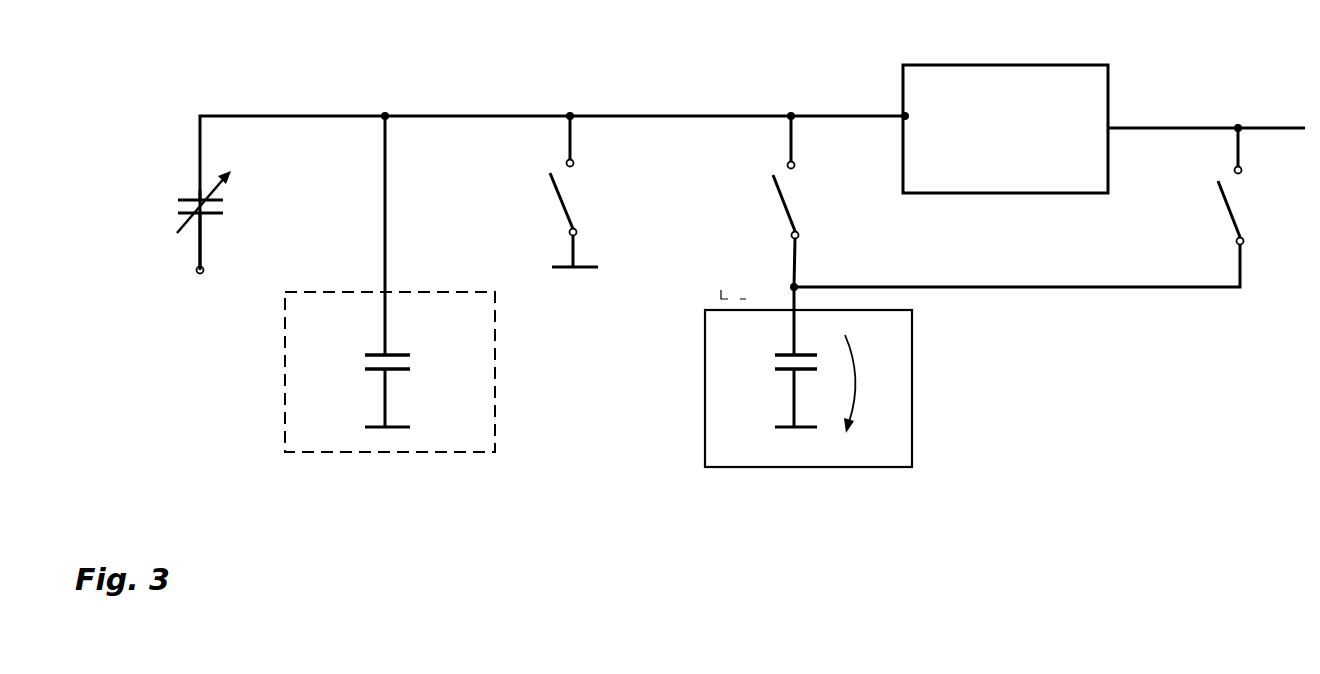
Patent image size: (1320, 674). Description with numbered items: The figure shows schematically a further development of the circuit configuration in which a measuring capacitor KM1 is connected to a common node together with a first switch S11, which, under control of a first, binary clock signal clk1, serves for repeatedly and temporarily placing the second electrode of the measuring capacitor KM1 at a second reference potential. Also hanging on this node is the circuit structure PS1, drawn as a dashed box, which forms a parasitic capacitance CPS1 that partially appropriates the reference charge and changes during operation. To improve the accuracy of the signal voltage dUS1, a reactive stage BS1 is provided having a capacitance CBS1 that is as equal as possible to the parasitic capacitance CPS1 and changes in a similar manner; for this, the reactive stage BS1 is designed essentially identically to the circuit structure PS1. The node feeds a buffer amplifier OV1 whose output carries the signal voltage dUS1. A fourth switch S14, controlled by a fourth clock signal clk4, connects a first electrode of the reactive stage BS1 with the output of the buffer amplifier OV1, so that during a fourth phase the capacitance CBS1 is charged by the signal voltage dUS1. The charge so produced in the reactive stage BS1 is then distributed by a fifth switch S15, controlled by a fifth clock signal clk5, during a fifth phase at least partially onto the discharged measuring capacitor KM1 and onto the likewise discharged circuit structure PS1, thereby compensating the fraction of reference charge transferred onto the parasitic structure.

The measuring capacitor KM1 is at (192, 197).
The circuit structure PS1 is at (292, 371).
The parasitic capacitance CPS1 is at (402, 271).
The first clock signal clk1 is at (536, 197).
The first switch S11 is at (562, 195).
The fifth clock signal clk5 is at (760, 198).
The fifth switch S15 is at (783, 197).
The reactive stage BS1 is at (715, 348).
The capacitance of the reactive stage CBS1 is at (811, 357).
The signal voltage dUS1 is at (872, 384).
The buffer amplifier OV1 is at (962, 67).
The fourth clock signal clk4 is at (1204, 205).
The fourth switch S14 is at (1230, 206).